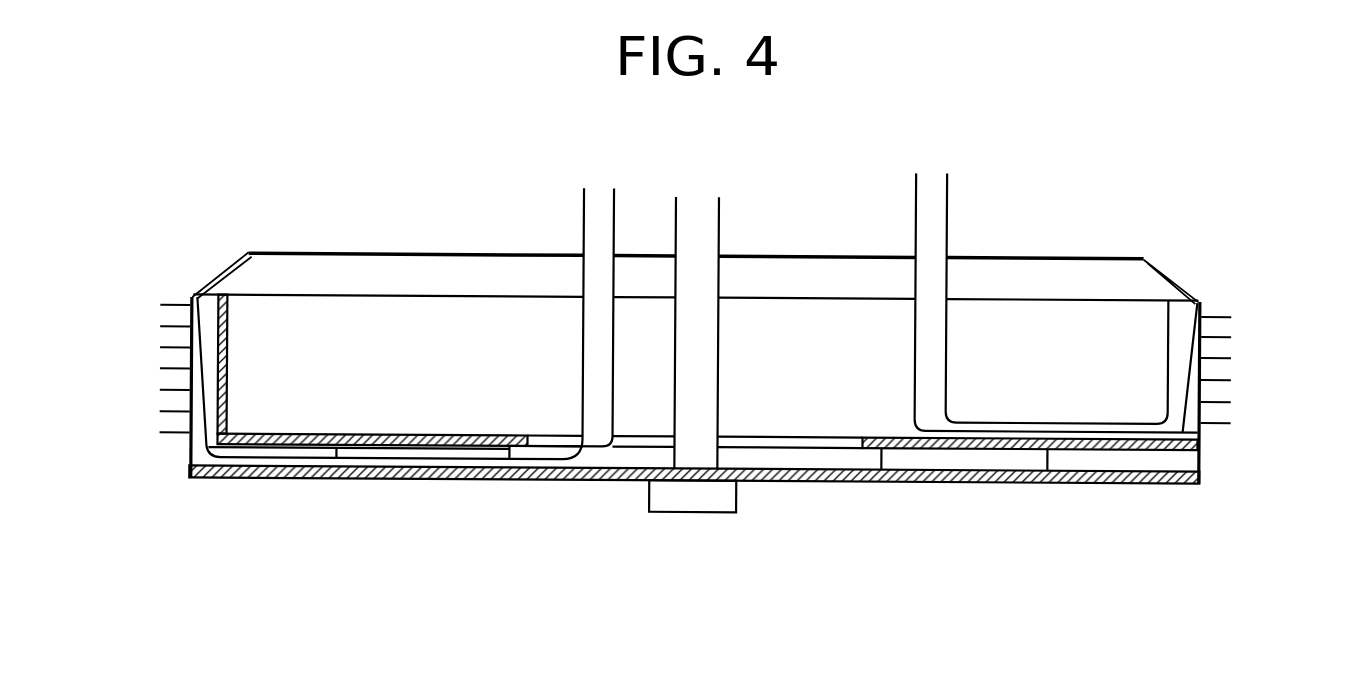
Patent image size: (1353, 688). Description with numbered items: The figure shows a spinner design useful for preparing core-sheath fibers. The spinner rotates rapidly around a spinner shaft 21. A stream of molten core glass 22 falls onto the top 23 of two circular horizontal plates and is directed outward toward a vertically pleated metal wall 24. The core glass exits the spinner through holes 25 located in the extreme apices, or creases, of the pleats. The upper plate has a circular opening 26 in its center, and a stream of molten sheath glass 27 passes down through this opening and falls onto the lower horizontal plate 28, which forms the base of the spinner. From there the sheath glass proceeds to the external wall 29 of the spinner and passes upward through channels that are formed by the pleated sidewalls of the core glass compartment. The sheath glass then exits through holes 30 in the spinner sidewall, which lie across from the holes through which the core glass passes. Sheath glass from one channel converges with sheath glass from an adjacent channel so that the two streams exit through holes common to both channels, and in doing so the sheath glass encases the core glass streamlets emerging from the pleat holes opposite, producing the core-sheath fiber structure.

The spinner shaft 21 is at (703, 392).
The molten core glass 22 is at (935, 228).
The top plate 23 is at (1138, 426).
The vertically pleated metal wall 24 is at (1200, 297).
The holes 25 is at (1202, 428).
The circular opening 26 is at (623, 452).
The molten sheath glass 27 is at (590, 246).
The lower horizontal plate 28 is at (426, 482).
The external wall 29 is at (187, 435).
The holes 30 is at (190, 300).